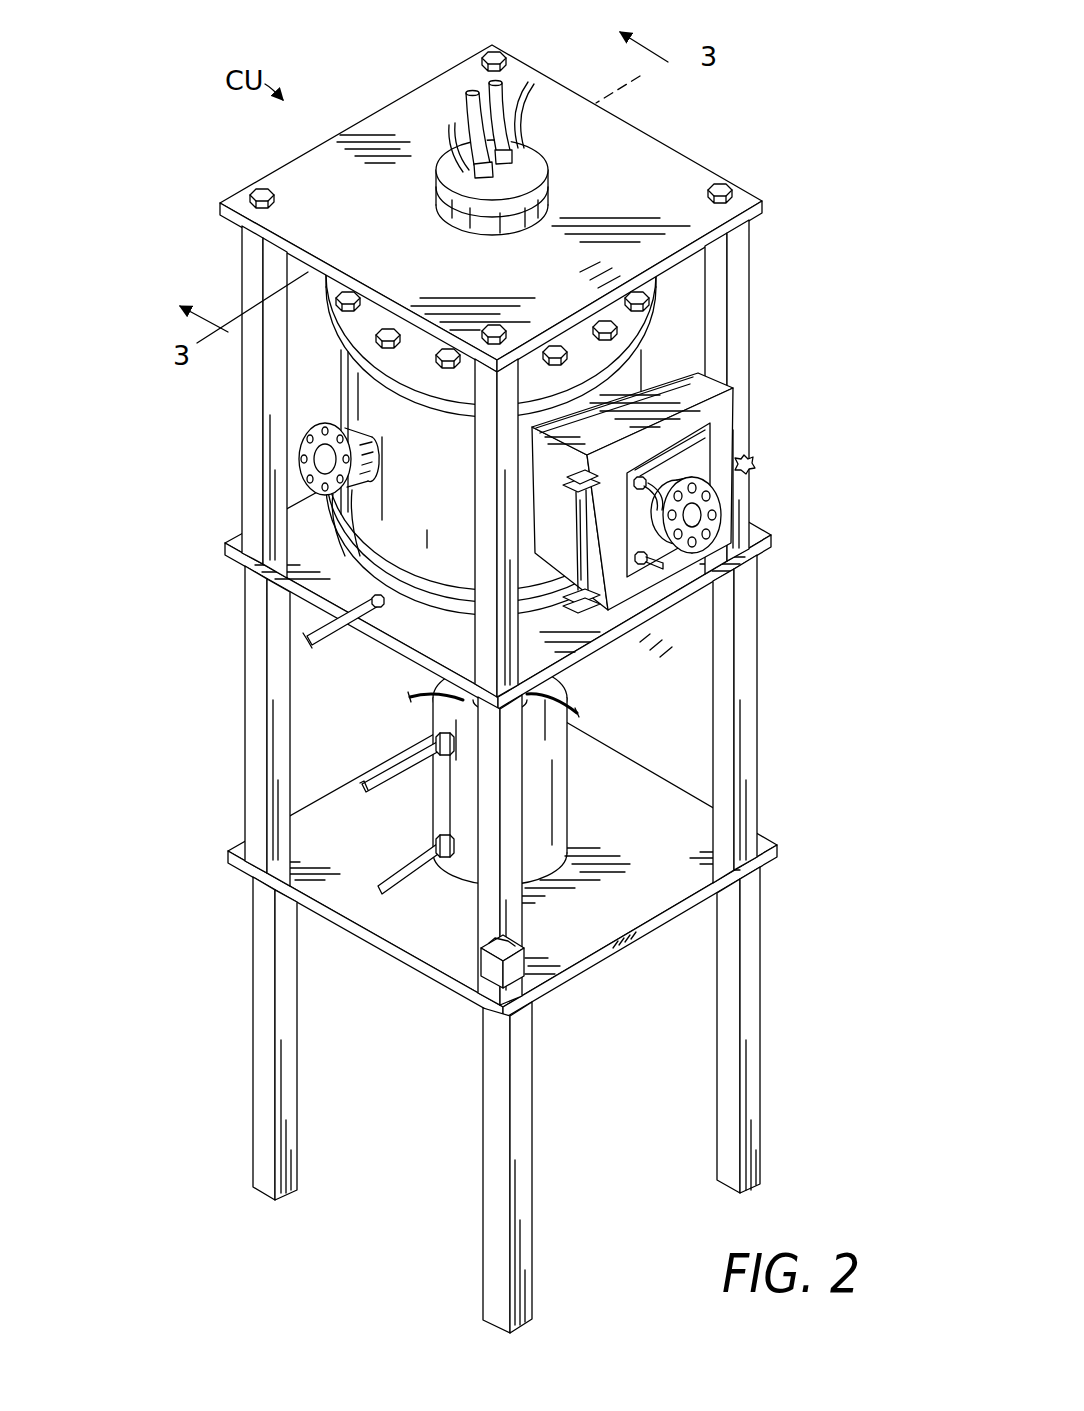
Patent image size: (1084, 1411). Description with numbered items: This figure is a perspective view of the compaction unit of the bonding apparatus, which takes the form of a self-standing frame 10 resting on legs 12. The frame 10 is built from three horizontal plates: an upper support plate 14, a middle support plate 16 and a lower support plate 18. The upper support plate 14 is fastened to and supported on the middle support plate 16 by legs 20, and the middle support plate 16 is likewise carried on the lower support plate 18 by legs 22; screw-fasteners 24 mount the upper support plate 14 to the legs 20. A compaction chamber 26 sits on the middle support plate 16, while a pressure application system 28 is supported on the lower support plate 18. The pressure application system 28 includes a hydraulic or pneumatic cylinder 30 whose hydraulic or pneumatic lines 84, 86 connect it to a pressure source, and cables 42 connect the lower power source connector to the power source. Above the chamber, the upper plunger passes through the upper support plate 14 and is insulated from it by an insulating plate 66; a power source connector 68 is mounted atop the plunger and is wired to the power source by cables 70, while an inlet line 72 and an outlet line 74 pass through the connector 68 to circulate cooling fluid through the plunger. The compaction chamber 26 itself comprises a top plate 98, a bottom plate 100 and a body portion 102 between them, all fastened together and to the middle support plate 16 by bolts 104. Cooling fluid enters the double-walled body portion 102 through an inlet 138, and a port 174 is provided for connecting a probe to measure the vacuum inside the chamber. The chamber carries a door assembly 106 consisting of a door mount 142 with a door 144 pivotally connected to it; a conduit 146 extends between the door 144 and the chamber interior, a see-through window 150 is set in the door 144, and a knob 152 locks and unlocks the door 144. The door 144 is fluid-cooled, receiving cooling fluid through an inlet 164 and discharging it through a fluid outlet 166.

The frame 10 is at (190, 556).
The legs 12 is at (298, 1135).
The upper support plate 14 is at (703, 166).
The middle support plate 16 is at (773, 543).
The lower support plate 18 is at (779, 847).
The legs 20 is at (244, 410).
The legs 22 is at (246, 748).
The screw-fasteners 24 is at (500, 56).
The compaction chamber 26 is at (360, 540).
The pressure application system 28 is at (433, 818).
The hydraulic or pneumatic cylinder 30 is at (570, 815).
The cables 42 is at (578, 702).
The insulating plate 66 is at (549, 205).
The power source connector 68 is at (549, 176).
The cables 70 is at (525, 130).
The inlet line 72 is at (467, 113).
The outlet line 74 is at (478, 84).
The hydraulic or pneumatic line 84 is at (430, 866).
The hydraulic or pneumatic line 86 is at (400, 765).
The top plate 98 is at (338, 345).
The bottom plate 100 is at (403, 617).
The body portion 102 is at (447, 461).
The bolts 104 is at (652, 306).
The door assembly 106 is at (742, 427).
The inlet 138 is at (313, 631).
The door mount 142 is at (720, 378).
The door 144 is at (727, 517).
The conduit 146 is at (550, 552).
The see-through window 150 is at (700, 527).
The knob 152 is at (755, 464).
The inlet 164 is at (650, 478).
The fluid outlet 166 is at (660, 568).
The port 174 is at (320, 462).